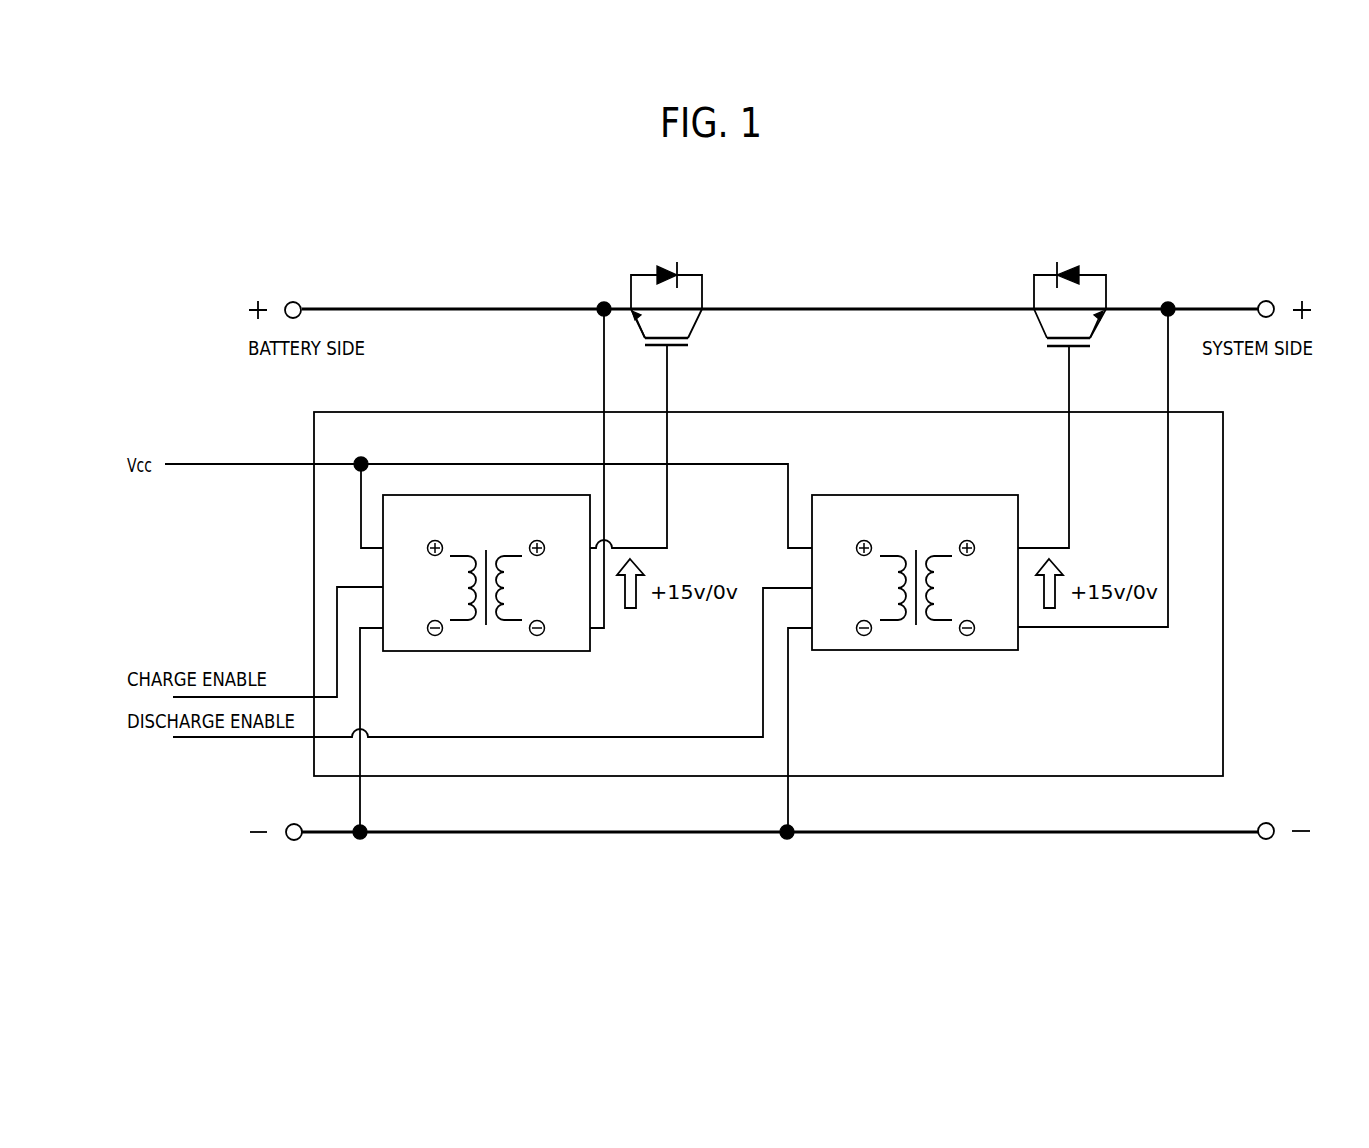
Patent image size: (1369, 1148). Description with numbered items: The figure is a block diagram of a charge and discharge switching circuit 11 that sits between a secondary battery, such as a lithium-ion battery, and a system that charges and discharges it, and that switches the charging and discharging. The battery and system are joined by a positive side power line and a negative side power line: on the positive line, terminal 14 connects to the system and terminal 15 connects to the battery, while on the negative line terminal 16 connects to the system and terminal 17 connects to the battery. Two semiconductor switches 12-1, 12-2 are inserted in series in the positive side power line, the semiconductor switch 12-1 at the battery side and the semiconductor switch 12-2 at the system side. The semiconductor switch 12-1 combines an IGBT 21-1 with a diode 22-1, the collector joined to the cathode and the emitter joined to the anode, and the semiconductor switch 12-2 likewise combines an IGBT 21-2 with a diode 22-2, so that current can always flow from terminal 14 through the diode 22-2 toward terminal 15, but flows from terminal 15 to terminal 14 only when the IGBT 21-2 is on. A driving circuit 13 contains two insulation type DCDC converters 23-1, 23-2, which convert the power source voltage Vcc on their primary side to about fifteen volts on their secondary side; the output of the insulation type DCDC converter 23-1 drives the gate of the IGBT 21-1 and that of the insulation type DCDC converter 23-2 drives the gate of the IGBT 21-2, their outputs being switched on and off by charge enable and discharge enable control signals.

The charge and discharge switching circuit 11 is at (380, 218).
The semiconductor switch 12-1 is at (733, 255).
The semiconductor switch 12-2 is at (1138, 256).
The driving circuit 13 is at (1225, 588).
The terminal 14 is at (1266, 301).
The terminal 15 is at (293, 302).
The terminal 16 is at (1266, 842).
The terminal 17 is at (294, 843).
The IGBT 21-1 is at (688, 348).
The IGBT 21-2 is at (1050, 348).
The diode 22-1 is at (666, 259).
The diode 22-2 is at (1067, 259).
The insulation type DCDC converter 23-1 is at (483, 653).
The insulation type DCDC converter 23-2 is at (916, 652).